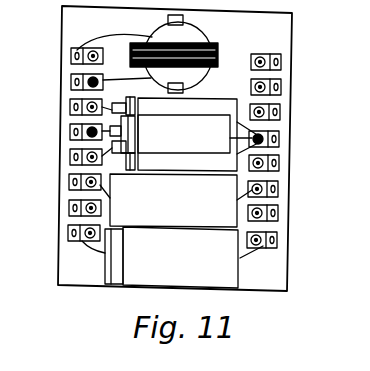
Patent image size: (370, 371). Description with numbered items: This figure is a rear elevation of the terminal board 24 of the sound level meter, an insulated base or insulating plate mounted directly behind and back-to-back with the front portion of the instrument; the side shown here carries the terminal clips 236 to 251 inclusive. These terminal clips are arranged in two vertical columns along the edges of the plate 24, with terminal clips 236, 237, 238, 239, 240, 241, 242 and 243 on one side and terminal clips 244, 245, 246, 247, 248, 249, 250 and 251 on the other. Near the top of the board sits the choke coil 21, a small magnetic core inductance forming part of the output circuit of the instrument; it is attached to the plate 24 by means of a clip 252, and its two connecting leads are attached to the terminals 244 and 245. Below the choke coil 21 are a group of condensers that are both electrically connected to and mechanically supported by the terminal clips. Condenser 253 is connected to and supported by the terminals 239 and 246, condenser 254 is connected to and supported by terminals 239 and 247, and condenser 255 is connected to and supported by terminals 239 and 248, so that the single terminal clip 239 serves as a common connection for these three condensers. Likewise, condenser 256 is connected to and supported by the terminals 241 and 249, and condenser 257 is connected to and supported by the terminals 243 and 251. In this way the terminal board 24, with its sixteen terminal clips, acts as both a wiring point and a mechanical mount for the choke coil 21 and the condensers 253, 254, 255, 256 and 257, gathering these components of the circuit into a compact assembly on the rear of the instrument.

The choke coil 21 is at (211, 46).
The terminal board 24 is at (292, 37).
The terminal clip 236 is at (281, 62).
The terminal clip 237 is at (281, 87).
The terminal clip 238 is at (280, 112).
The terminal clip 239 is at (279, 139).
The terminal clip 240 is at (279, 163).
The terminal clip 241 is at (278, 189).
The terminal clip 242 is at (278, 213).
The terminal clip 243 is at (277, 240).
The terminal clip 244 is at (71, 56).
The terminal clip 245 is at (71, 82).
The terminal clip 246 is at (70, 107).
The terminal clip 247 is at (70, 132).
The terminal clip 248 is at (70, 157).
The terminal clip 249 is at (69, 182).
The terminal clip 250 is at (69, 208).
The terminal clip 251 is at (68, 233).
The clip 252 is at (222, 55).
The condenser 253 is at (174, 134).
The condenser 254 is at (170, 134).
The condenser 255 is at (150, 157).
The condenser 256 is at (173, 200).
The condenser 257 is at (171, 257).